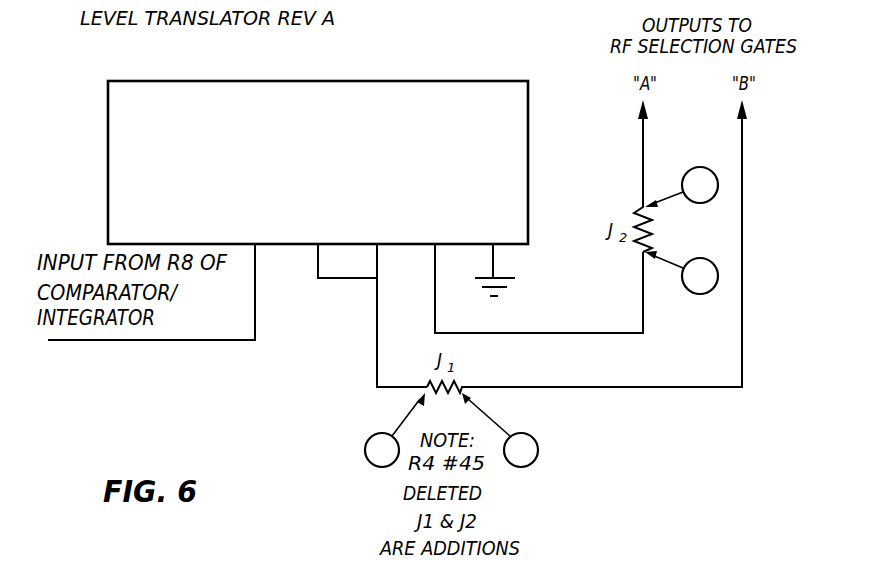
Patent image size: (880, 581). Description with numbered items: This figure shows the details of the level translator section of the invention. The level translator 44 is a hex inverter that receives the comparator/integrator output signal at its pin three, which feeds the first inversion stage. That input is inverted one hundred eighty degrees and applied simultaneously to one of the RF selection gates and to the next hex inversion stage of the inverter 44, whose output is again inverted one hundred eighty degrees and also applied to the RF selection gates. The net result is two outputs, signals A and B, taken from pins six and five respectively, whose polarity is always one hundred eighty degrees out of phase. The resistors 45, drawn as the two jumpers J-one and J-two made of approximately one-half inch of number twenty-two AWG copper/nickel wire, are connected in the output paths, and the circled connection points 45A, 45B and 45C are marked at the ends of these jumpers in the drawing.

The level translator 44 is at (405, 92).
The resistors 45 is at (700, 167).
The connection point Y 45A is at (538, 450).
The connection point W 45B is at (704, 293).
The connection point V 45C is at (365, 450).